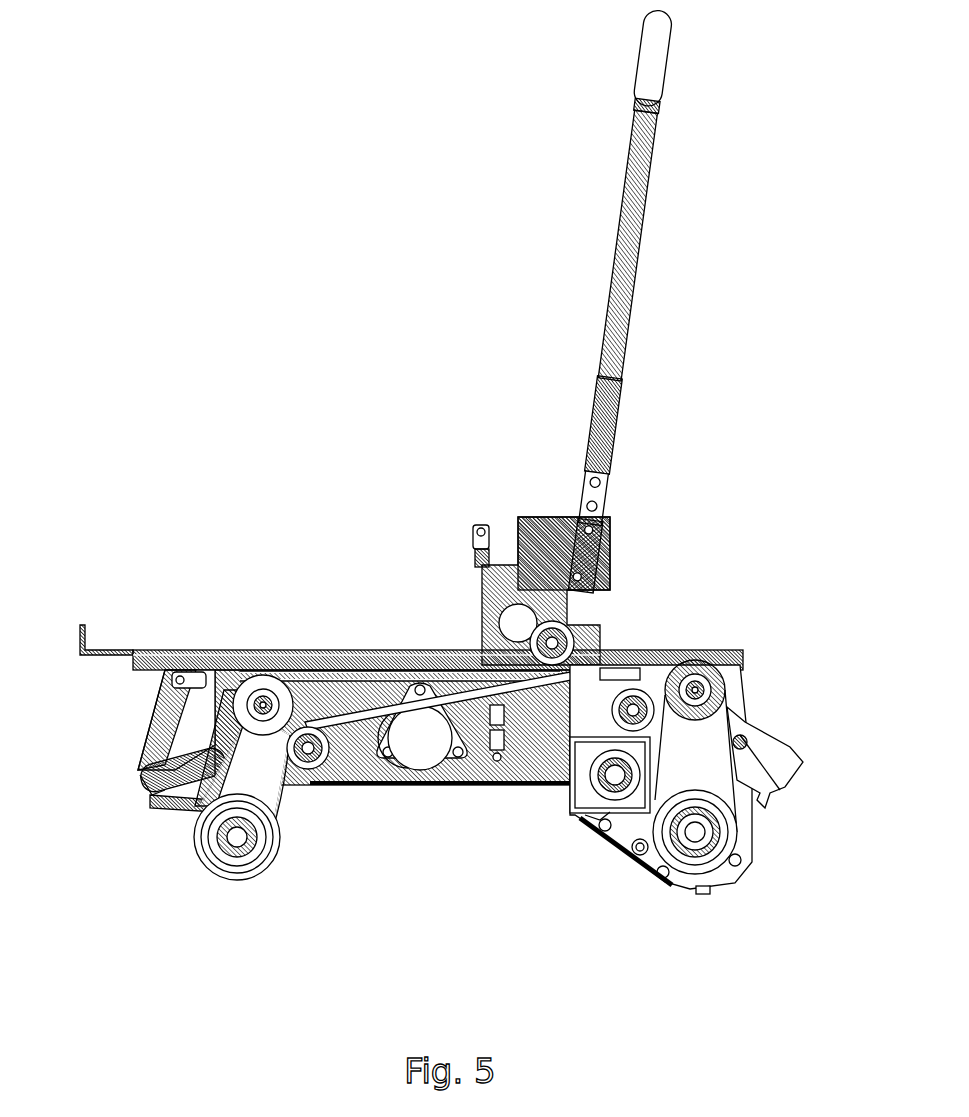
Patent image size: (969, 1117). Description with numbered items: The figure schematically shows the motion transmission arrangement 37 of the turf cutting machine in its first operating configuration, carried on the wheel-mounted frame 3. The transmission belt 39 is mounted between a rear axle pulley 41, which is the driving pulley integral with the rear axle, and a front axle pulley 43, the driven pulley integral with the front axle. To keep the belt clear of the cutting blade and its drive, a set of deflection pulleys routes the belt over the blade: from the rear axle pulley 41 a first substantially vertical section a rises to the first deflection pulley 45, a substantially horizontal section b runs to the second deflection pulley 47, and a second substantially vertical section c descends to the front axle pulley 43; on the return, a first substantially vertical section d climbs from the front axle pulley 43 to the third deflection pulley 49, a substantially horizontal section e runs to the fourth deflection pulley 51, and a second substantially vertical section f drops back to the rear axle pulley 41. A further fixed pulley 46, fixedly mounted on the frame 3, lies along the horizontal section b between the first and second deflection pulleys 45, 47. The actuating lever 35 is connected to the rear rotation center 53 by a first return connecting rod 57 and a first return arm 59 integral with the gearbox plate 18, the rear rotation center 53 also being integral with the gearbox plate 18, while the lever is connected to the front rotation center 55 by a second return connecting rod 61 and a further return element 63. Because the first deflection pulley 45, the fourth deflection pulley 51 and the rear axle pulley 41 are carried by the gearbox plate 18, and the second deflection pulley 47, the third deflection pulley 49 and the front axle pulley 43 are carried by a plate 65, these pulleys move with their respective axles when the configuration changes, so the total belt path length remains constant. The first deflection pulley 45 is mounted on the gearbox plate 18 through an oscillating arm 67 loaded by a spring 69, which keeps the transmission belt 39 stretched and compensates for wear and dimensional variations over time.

The frame 3 is at (470, 653).
The gearbox plate 18 is at (640, 852).
The actuating lever 35 is at (618, 128).
The transmission arrangement 37 is at (335, 186).
The transmission belt 39 is at (425, 790).
The rear axle pulley 41 is at (665, 872).
The front axle pulley 43 is at (215, 850).
The first deflection pulley 45 is at (718, 668).
The fixed pulley 46 is at (580, 632).
The second deflection pulley 47 is at (252, 653).
The third deflection pulley 49 is at (312, 775).
The fourth deflection pulley 51 is at (642, 690).
The rear rotation center 53 is at (592, 798).
The front rotation center 55 is at (135, 790).
The first return connecting rod 57 is at (479, 562).
The first return arm 59 is at (517, 790).
The second return connecting rod 61 is at (225, 653).
The return element 63 is at (165, 705).
The plate 65 is at (142, 760).
The oscillating arm 67 is at (770, 747).
The spring 69 is at (752, 768).
The first substantially vertical section a is at (728, 710).
The substantially horizontal section b is at (352, 653).
The second substantially vertical section c is at (180, 812).
The first substantially vertical section of the return portion d is at (290, 800).
The substantially horizontal section of the return portion e is at (318, 653).
The second substantially vertical section of the return portion f is at (605, 822).